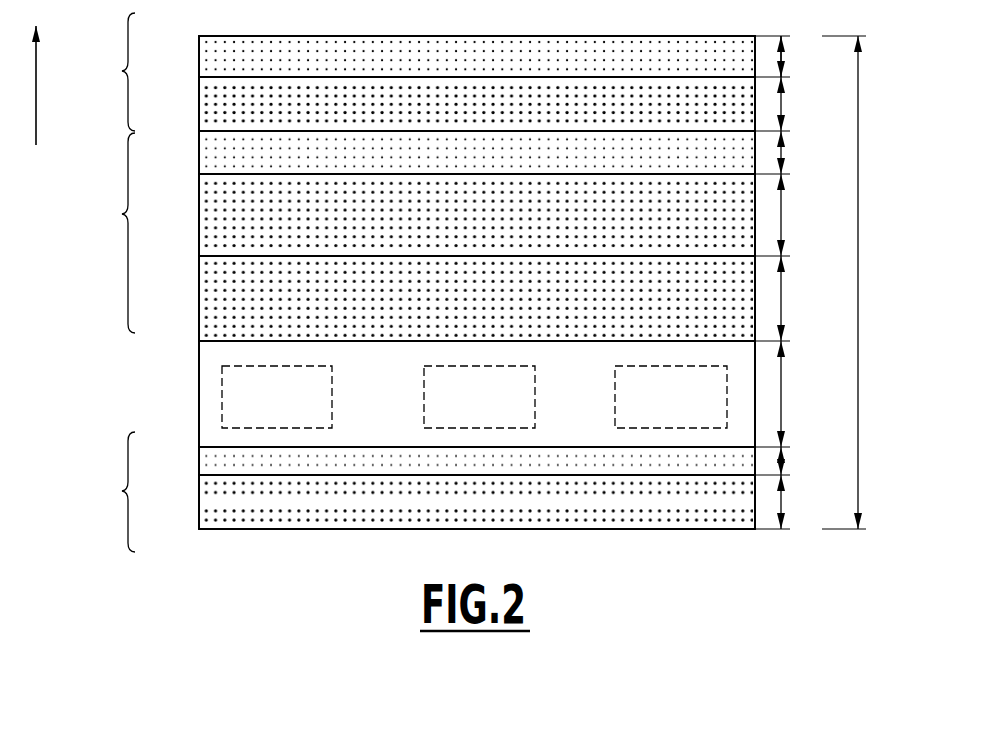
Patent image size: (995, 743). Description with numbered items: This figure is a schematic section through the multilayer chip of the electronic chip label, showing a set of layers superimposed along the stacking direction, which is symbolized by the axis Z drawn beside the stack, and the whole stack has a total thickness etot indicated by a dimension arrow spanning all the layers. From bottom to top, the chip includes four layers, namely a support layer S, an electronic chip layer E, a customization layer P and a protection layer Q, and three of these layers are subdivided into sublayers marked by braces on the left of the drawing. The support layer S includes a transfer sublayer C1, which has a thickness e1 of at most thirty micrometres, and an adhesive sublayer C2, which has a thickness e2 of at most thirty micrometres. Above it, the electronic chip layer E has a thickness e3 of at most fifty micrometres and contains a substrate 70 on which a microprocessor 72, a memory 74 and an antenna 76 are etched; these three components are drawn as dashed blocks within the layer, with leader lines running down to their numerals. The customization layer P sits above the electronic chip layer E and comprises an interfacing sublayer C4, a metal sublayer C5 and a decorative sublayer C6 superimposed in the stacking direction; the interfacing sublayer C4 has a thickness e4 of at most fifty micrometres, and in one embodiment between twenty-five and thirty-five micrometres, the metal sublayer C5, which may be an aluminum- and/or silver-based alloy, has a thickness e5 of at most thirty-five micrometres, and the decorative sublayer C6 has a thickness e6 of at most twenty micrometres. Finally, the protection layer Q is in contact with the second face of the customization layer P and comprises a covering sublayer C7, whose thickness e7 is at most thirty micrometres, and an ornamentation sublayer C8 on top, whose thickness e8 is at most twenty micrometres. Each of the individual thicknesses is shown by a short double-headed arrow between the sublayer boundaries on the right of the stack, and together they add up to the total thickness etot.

The substrate 70 is at (574, 428).
The microprocessor 72 is at (283, 428).
The memory 74 is at (478, 428).
The antenna 76 is at (670, 428).
The transfer sublayer C1 is at (212, 498).
The adhesive sublayer C2 is at (212, 458).
The interfacing sublayer C4 is at (212, 306).
The metal sublayer C5 is at (216, 204).
The decorative sublayer C6 is at (208, 146).
The covering sublayer C7 is at (218, 113).
The ornamentation sublayer C8 is at (212, 62).
The electronic chip layer E is at (206, 394).
The support layer S is at (121, 492).
The customization layer P is at (119, 233).
The protection layer Q is at (120, 72).
The thickness of the transfer sublayer e1 is at (799, 502).
The thickness of the adhesive sublayer e2 is at (800, 460).
The thickness of the electronic chip layer e3 is at (801, 394).
The thickness of the interfacing sublayer e4 is at (801, 298).
The thickness of the metal sublayer e5 is at (799, 215).
The thickness of the decorative sublayer e6 is at (799, 152).
The thickness of the covering sublayer e7 is at (799, 104).
The thickness of the ornamentation sublayer e8 is at (798, 56).
The total thickness etot is at (846, 282).
The stacking direction axis z is at (49, 78).